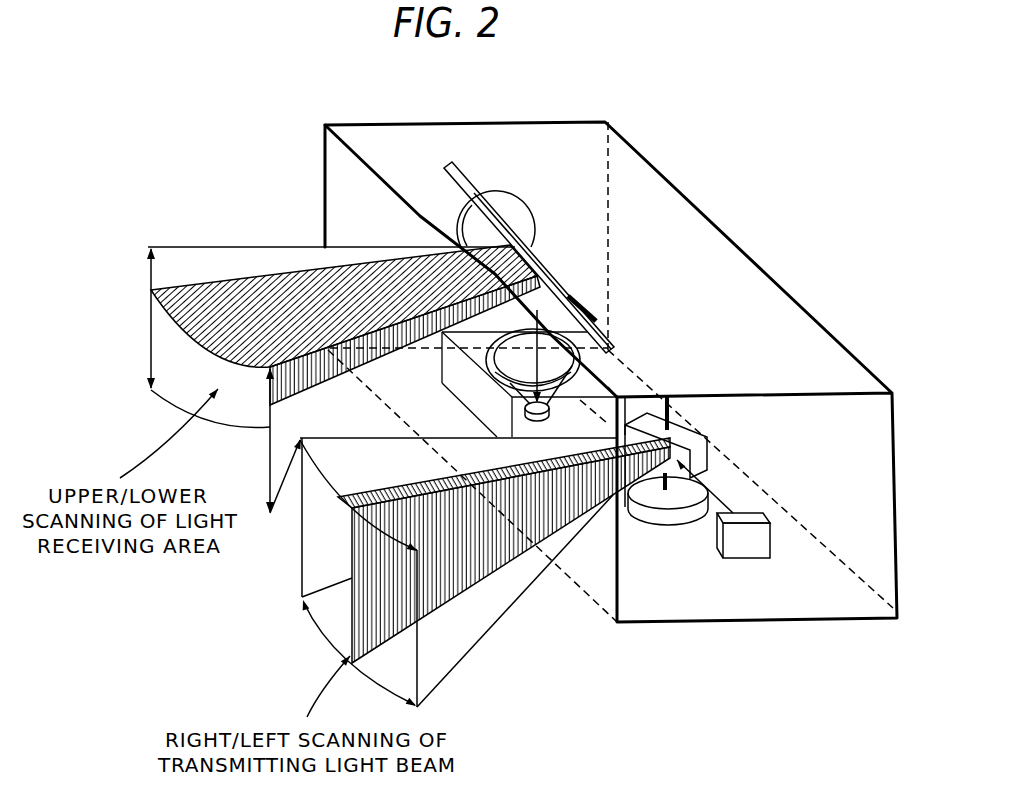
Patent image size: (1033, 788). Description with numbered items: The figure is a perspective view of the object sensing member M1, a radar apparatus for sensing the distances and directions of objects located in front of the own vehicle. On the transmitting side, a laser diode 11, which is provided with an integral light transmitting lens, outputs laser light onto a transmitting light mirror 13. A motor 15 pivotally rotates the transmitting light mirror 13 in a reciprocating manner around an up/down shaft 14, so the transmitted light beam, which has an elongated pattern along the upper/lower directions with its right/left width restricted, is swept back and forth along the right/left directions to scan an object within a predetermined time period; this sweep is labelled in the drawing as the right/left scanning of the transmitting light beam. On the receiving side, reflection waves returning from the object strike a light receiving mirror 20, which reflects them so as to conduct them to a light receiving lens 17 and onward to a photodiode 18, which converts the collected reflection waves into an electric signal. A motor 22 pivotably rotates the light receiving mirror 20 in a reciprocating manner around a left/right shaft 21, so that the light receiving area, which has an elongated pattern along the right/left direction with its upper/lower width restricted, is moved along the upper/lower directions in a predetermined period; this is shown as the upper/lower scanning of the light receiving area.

The object sensing member M1 is at (797, 194).
The laser diode 11 is at (742, 547).
The transmitting light mirror 13 is at (700, 457).
The up/down shaft 14 is at (671, 410).
The motor 15 is at (663, 517).
The light receiving lens 17 is at (585, 352).
The photodiode 18 is at (518, 405).
The light receiving mirror 20 is at (470, 177).
The left/right shaft 21 is at (580, 300).
The motor 22 is at (518, 215).